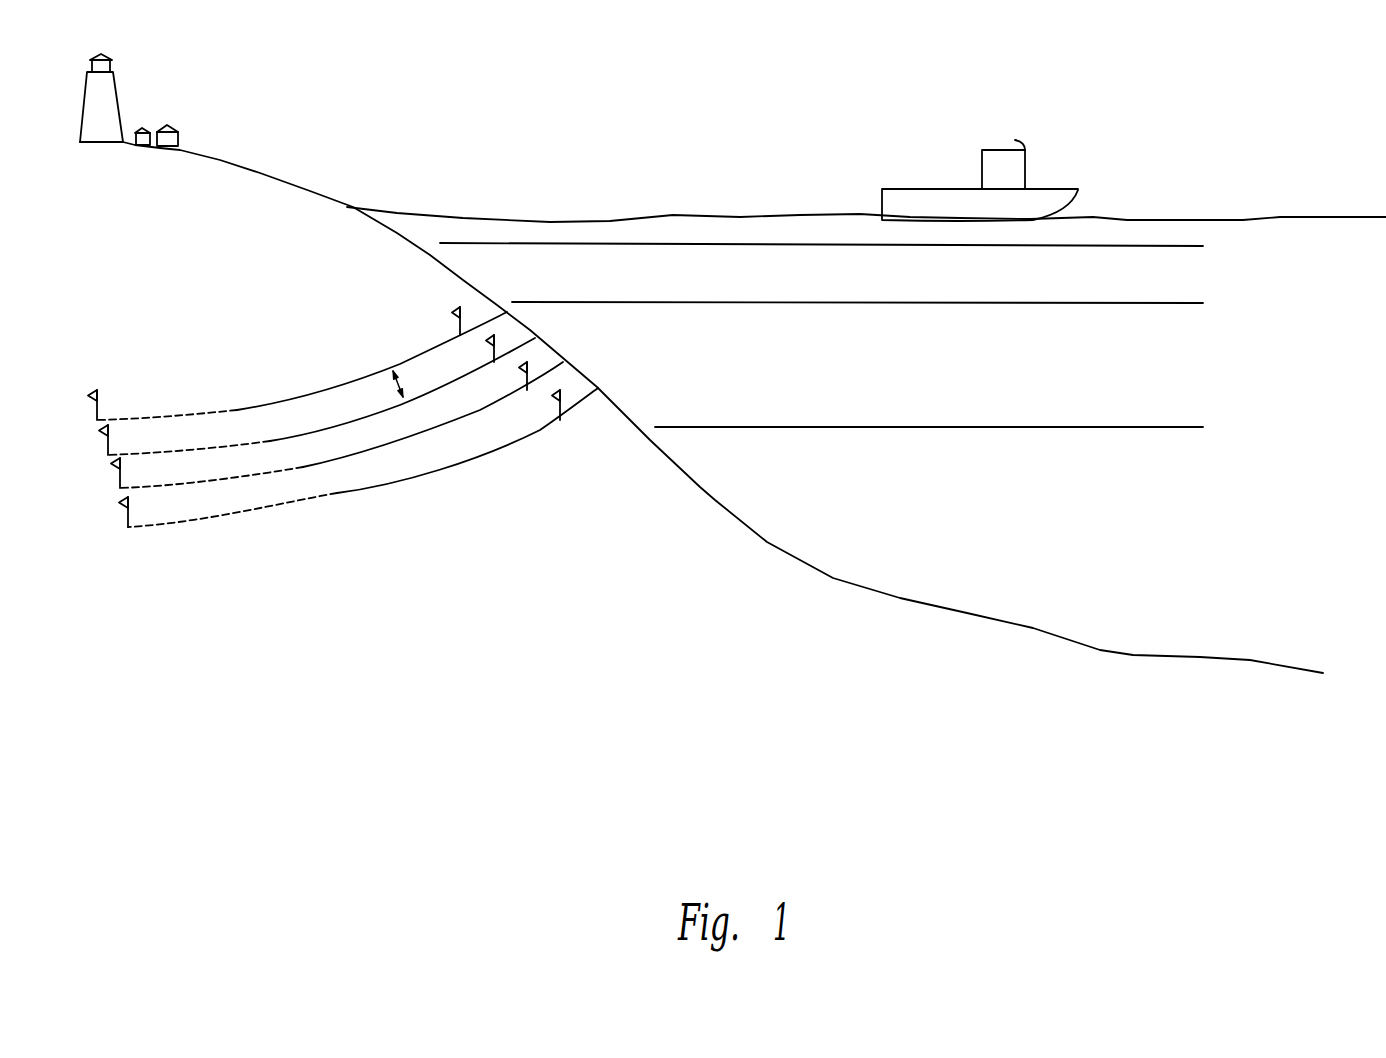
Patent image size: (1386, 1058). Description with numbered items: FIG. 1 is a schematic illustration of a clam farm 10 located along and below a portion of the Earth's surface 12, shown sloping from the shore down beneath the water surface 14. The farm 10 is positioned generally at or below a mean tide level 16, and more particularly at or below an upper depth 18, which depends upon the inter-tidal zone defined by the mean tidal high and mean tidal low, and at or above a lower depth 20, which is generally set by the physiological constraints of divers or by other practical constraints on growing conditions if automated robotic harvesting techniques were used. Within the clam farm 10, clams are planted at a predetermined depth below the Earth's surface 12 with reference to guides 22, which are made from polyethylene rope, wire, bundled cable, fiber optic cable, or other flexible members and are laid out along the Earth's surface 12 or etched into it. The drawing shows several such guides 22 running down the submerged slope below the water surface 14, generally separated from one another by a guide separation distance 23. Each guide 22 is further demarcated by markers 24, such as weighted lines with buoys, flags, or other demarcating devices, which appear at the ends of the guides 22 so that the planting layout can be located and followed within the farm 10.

The clam farm 10 is at (254, 300).
The Earth's surface 12 is at (260, 175).
The sea surface 14 is at (1242, 218).
The mean tide level 16 is at (900, 246).
The upper depth 18 is at (1055, 304).
The lower depth 20 is at (1042, 428).
The guides 22 is at (487, 322).
The guide separation distance 23 is at (394, 382).
The markers 24 is at (98, 392).